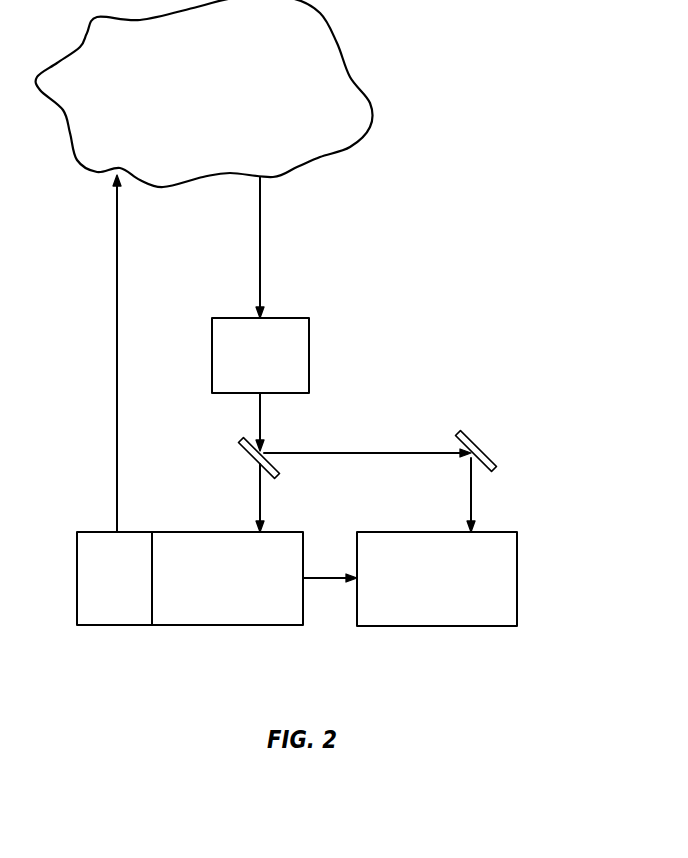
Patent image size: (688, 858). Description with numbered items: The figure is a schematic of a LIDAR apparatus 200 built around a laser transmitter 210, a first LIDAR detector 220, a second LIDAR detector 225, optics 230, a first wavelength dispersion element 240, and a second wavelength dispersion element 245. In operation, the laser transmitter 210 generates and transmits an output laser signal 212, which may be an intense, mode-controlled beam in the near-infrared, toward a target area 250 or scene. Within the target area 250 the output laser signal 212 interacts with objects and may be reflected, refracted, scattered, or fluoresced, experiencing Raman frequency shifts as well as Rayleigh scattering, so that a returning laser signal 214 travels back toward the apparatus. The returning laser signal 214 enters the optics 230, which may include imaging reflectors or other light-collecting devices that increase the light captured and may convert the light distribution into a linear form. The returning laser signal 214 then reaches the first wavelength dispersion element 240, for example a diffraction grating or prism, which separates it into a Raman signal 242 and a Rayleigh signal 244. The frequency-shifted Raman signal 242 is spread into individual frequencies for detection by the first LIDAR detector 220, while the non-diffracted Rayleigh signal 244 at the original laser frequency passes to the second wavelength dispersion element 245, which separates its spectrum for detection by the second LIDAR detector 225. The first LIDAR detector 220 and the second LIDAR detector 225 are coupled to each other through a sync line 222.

The LIDAR apparatus 200 is at (487, 206).
The laser transmitter 210 is at (105, 625).
The output laser signal 212 is at (117, 357).
The returning laser signal 214 is at (260, 258).
The first LIDAR detector 220 is at (218, 625).
The sync line 222 is at (322, 580).
The second LIDAR detector 225 is at (517, 578).
The optics 230 is at (309, 355).
The first wavelength dispersion element 240 is at (241, 444).
The Raman signal 242 is at (260, 490).
The Rayleigh signal 244 is at (372, 453).
The second wavelength dispersion element 245 is at (462, 434).
The target area 250 is at (211, 101).